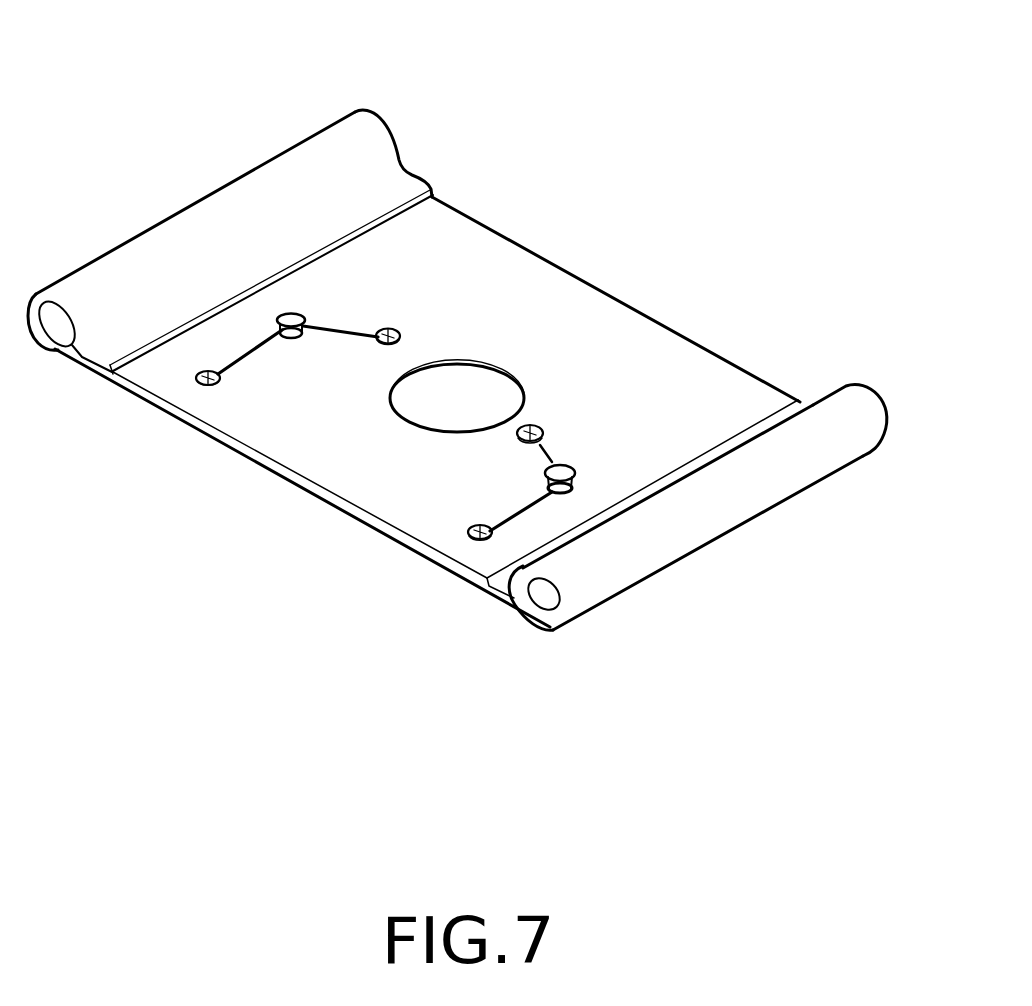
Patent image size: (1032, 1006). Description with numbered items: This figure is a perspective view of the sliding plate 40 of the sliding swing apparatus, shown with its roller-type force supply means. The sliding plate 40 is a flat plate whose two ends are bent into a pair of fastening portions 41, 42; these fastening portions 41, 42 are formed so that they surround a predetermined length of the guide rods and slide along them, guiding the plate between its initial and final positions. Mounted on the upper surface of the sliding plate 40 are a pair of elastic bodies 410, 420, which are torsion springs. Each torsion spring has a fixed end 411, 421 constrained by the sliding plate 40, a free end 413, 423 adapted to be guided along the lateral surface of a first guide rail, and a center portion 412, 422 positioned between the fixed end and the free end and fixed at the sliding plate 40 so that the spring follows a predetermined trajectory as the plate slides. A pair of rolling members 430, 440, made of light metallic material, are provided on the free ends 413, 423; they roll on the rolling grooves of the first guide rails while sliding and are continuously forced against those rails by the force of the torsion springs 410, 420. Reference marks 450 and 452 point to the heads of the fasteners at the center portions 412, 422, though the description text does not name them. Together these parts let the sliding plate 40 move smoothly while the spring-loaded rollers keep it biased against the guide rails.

The sliding plate 40 is at (804, 343).
The fastening portion 41 is at (783, 472).
The fastening portion 42 is at (182, 233).
The elastic body 410 is at (287, 350).
The fixed end 411 is at (200, 380).
The center portion 412 is at (293, 340).
The free end 413 is at (387, 328).
The elastic body 420 is at (580, 500).
The fixed end 421 is at (473, 528).
The center portion 422 is at (555, 496).
The free end 423 is at (533, 425).
The rolling member 430 is at (400, 340).
The rolling member 440 is at (541, 432).
The first pivot screw head 450 is at (288, 312).
The second pivot screw head 452 is at (574, 477).